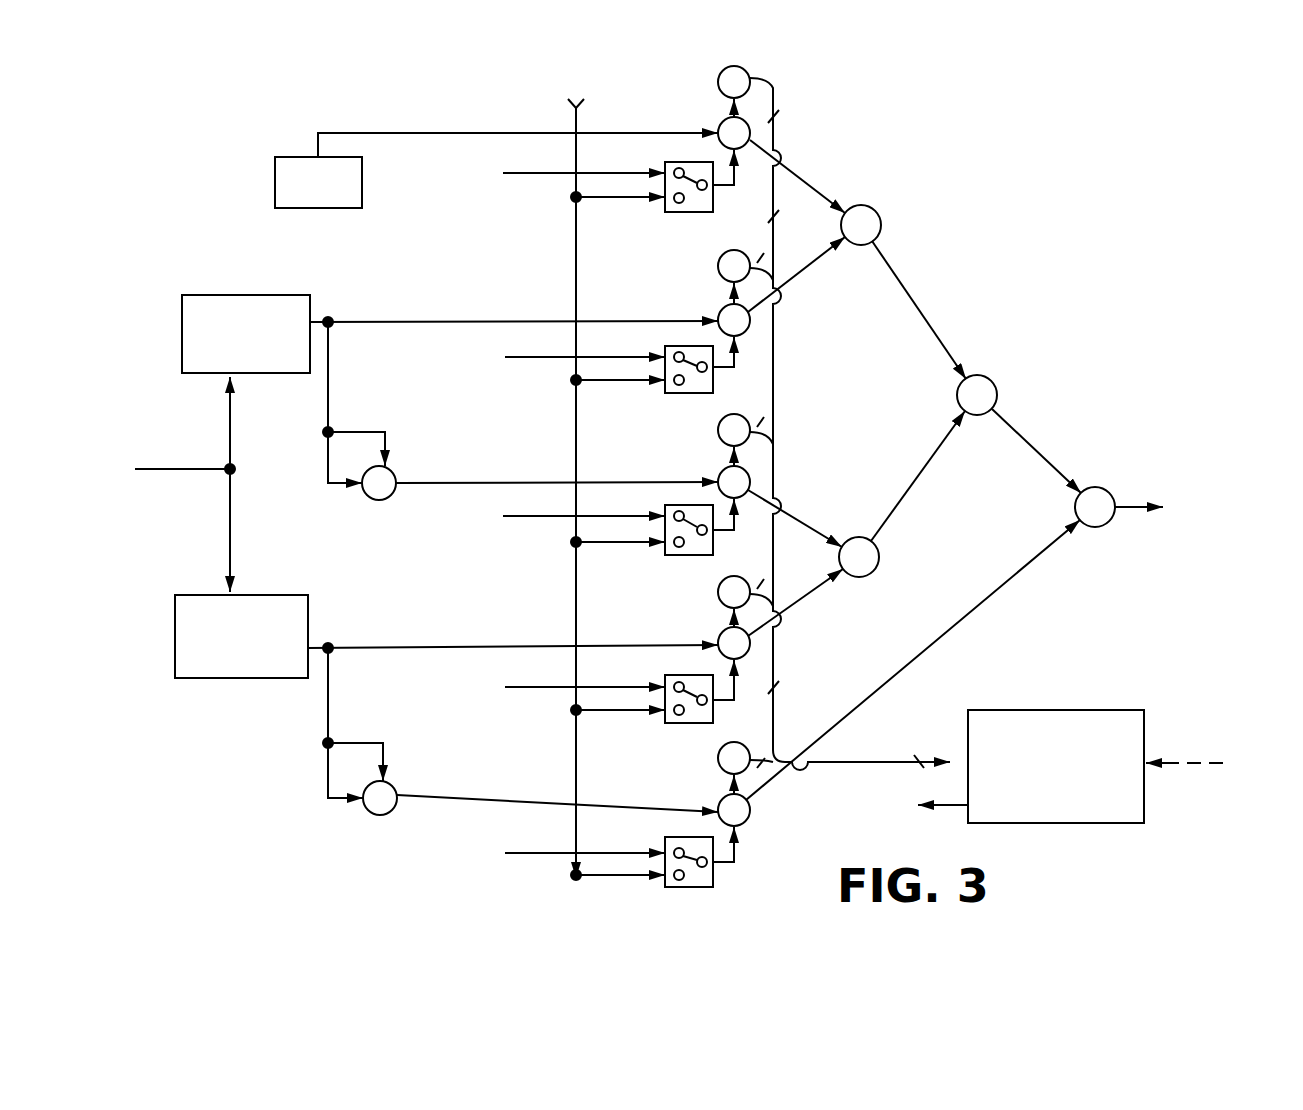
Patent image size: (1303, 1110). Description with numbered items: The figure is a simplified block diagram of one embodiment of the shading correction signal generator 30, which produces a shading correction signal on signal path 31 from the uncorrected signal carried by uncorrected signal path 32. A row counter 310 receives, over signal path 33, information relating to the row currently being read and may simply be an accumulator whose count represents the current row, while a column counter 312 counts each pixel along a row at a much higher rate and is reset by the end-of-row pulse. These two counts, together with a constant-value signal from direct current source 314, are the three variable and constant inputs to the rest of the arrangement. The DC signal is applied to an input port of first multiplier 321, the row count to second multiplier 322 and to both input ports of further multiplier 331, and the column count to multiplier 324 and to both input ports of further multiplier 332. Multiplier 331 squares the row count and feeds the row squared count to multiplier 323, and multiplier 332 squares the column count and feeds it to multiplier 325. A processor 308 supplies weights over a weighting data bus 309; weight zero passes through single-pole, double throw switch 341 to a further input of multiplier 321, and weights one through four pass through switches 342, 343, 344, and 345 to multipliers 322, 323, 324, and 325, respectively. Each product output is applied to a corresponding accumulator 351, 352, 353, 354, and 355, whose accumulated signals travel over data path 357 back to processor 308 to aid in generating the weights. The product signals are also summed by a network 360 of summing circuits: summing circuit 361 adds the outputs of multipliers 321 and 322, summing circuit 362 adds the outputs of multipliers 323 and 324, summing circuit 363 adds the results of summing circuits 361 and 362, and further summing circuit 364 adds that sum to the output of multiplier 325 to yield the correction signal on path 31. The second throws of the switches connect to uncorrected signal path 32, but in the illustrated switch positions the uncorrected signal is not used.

The shading correction signal generator 30 is at (224, 870).
The signal path 31 is at (1135, 508).
The uncorrected signal path 32 is at (578, 118).
The signal path 33 is at (175, 468).
The processor 308 is at (1060, 710).
The weighting data bus 309 is at (524, 175).
The row counter 310 is at (268, 295).
The column counter 312 is at (272, 595).
The direct current source 314 is at (275, 192).
The first multiplier 321 is at (721, 121).
The second multiplier 322 is at (718, 313).
The multiplier 323 is at (718, 475).
The multiplier 324 is at (718, 637).
The multiplier 325 is at (718, 804).
The further multiplier 331 is at (384, 500).
The further multiplier 332 is at (391, 814).
The single-pole, double throw switch 341 is at (686, 212).
The switch 342 is at (685, 393).
The switch 343 is at (681, 555).
The switch 344 is at (678, 723).
The switch 345 is at (700, 887).
The accumulator 351 is at (752, 73).
The accumulator 352 is at (717, 263).
The accumulator 353 is at (752, 425).
The accumulator 354 is at (718, 594).
The accumulator 355 is at (718, 760).
The data path 357 is at (856, 764).
The network of summing circuits 360 is at (952, 539).
The summing circuit 361 is at (882, 223).
The summing circuit 362 is at (870, 577).
The summing circuit 363 is at (957, 395).
The further summing circuit 364 is at (1075, 503).